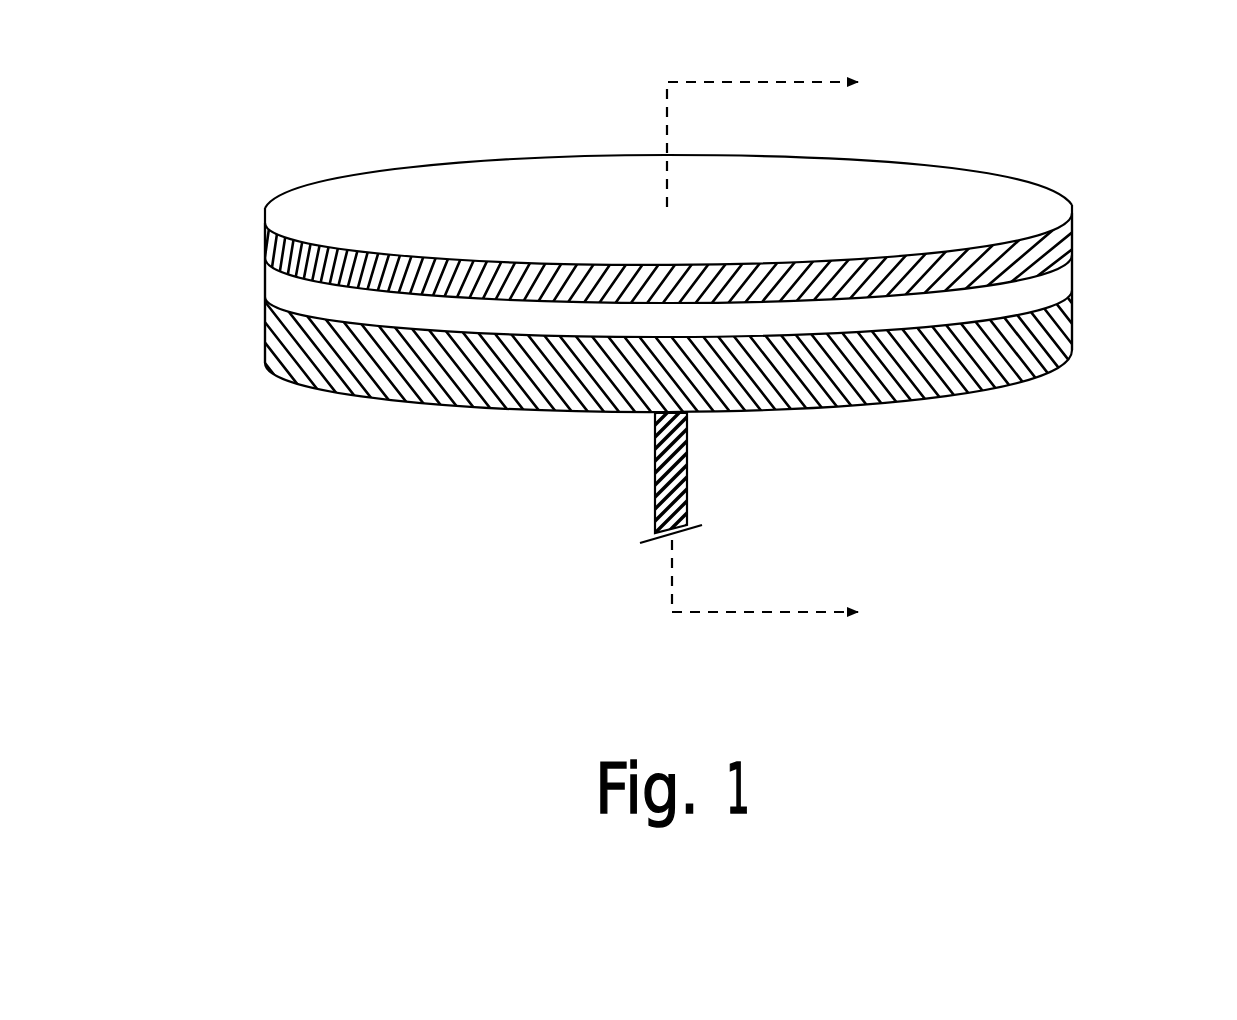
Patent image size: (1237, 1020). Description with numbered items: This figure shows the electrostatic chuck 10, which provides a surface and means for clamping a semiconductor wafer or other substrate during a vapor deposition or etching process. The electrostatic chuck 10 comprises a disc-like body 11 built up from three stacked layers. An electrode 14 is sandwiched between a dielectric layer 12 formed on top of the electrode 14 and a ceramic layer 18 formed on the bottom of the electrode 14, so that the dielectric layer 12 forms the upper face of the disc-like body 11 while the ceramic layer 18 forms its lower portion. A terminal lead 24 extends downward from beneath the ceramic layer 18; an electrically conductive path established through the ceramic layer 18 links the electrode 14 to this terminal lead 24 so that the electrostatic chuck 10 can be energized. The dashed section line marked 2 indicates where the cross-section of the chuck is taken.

The layered disc assembly 10 is at (968, 150).
The side wall 11 is at (1076, 348).
The top layer 12 is at (346, 203).
The intermediate layer 14 is at (292, 285).
The base layer 18 is at (427, 406).
The stem 24 is at (655, 490).
The section line 2- 2 is at (780, 345).